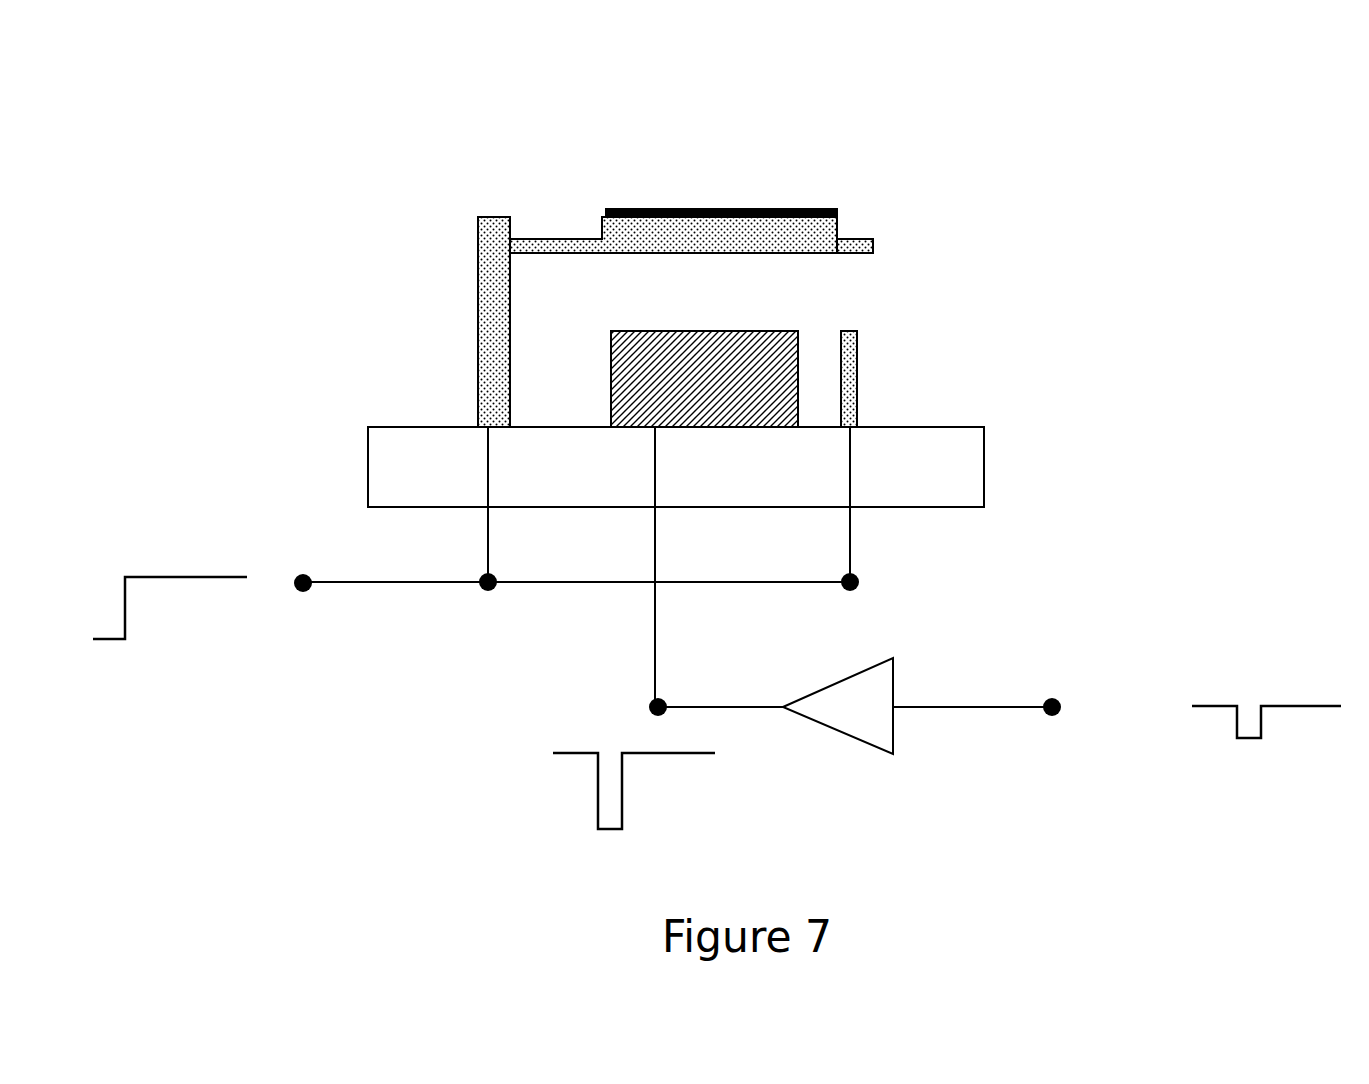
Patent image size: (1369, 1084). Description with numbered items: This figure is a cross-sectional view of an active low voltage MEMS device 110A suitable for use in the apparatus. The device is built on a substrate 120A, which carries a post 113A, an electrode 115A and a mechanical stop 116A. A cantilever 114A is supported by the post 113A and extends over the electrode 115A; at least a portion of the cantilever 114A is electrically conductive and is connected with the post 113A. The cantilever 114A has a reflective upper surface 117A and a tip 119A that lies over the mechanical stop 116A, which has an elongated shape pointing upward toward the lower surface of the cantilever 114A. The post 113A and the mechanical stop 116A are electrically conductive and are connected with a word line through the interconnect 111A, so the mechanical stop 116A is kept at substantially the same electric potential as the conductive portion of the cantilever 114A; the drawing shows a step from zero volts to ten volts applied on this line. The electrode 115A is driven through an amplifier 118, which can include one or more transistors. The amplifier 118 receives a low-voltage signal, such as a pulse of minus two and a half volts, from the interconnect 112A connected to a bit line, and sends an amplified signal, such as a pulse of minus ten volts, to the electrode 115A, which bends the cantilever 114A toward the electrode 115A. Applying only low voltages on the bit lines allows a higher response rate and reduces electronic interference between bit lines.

The low voltage MEMS device 110A is at (1070, 136).
The interconnect 111A is at (452, 541).
The interconnect 112A is at (1117, 738).
The post 113A is at (497, 349).
The cantilever 114A is at (782, 232).
The electrode 115A is at (724, 323).
The mechanical stop 116A is at (860, 366).
The reflective upper surface 117A is at (747, 205).
The amplifier 118 is at (877, 690).
The tip 119A is at (847, 245).
The substrate 120A is at (955, 469).